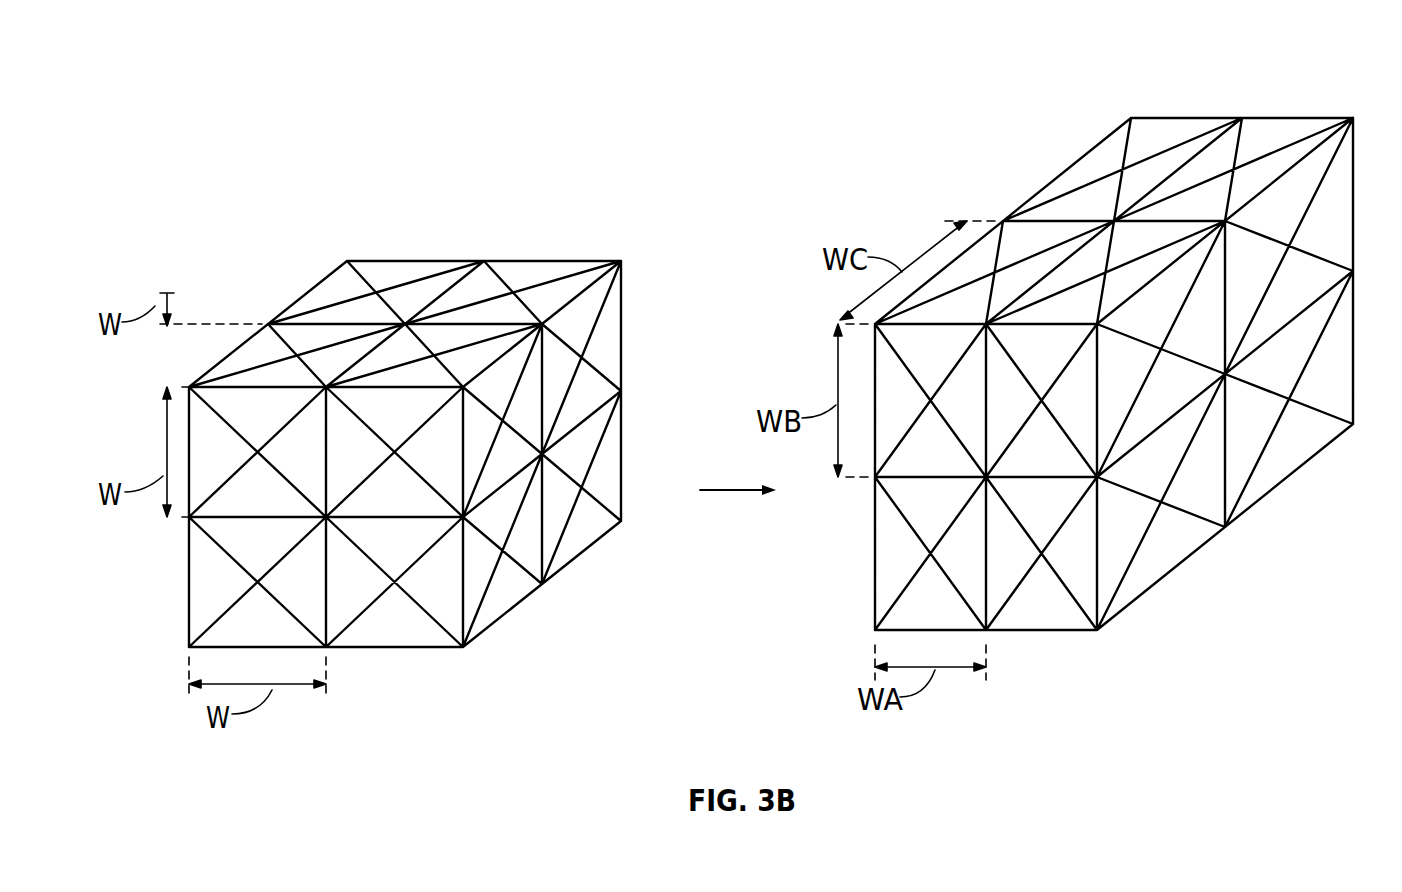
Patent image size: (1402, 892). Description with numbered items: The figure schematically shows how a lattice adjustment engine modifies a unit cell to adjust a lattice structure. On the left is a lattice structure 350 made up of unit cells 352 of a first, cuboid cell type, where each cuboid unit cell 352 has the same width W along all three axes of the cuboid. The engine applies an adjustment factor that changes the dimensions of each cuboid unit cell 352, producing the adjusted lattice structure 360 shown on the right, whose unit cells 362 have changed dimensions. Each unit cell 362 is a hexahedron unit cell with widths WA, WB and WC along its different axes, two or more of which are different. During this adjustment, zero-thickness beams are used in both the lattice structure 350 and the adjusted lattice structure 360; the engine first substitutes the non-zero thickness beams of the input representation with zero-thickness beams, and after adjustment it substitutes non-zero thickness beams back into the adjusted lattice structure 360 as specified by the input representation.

The lattice structure 350 is at (393, 412).
The cuboid unit cell 352 is at (530, 272).
The adjusted lattice structure 360 is at (1081, 371).
The hexahedron unit cell 362 is at (1097, 148).